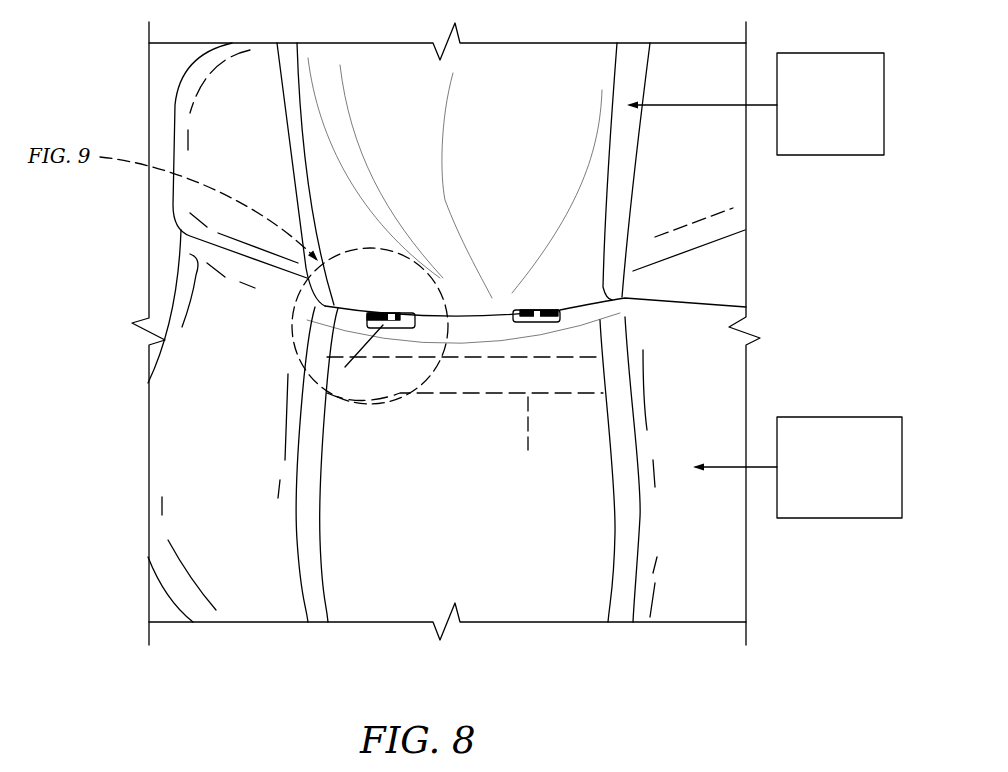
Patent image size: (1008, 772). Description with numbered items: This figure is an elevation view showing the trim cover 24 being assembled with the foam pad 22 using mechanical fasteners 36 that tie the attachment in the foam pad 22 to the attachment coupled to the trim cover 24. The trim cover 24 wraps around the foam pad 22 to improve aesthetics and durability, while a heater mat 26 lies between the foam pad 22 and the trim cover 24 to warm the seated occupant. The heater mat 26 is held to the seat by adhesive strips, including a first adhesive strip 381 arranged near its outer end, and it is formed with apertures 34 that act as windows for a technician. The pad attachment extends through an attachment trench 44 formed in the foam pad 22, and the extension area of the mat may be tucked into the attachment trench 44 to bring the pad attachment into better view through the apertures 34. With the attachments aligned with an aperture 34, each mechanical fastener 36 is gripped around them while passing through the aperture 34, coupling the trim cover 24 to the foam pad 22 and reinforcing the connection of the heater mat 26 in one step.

The foam pad 22 is at (165, 122).
The trim cover 24 is at (832, 53).
The heater mat 26 is at (318, 489).
The aperture 34 is at (385, 325).
The mechanical fastener 36 is at (366, 327).
The attachment trench 44 is at (575, 315).
The first adhesive strip 381 is at (528, 450).